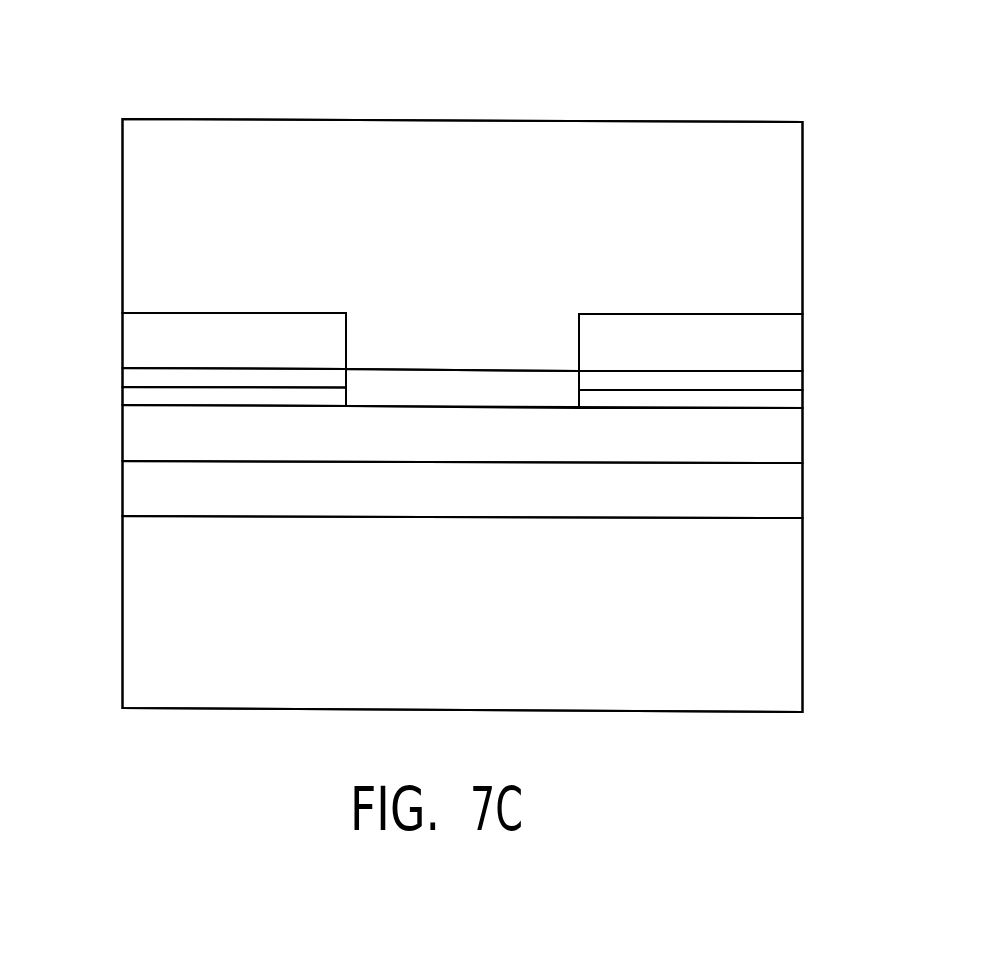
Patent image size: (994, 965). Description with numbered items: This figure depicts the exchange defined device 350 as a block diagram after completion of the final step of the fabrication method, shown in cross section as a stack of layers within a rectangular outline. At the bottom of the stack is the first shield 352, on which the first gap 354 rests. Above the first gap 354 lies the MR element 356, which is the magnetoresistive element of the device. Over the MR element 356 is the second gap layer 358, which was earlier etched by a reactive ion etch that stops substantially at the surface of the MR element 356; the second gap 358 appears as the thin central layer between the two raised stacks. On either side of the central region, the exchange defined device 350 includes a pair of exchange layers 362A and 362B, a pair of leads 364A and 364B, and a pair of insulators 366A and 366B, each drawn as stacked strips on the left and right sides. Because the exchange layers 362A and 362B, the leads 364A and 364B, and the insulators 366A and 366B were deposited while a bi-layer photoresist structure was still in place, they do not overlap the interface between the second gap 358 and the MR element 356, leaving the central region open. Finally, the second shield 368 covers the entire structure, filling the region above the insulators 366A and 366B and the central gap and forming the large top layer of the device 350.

The exchange defined device 350 is at (497, 46).
The first shield 352 is at (122, 602).
The first gap 354 is at (122, 492).
The MR element 356 is at (122, 441).
The second gap layer 358 is at (468, 369).
The exchange layer 362A is at (122, 394).
The exchange layer 362B is at (803, 397).
The lead 364A is at (122, 378).
The lead 364B is at (803, 383).
The insulator 366A is at (122, 325).
The insulator 366B is at (803, 330).
The second shield 368 is at (122, 190).